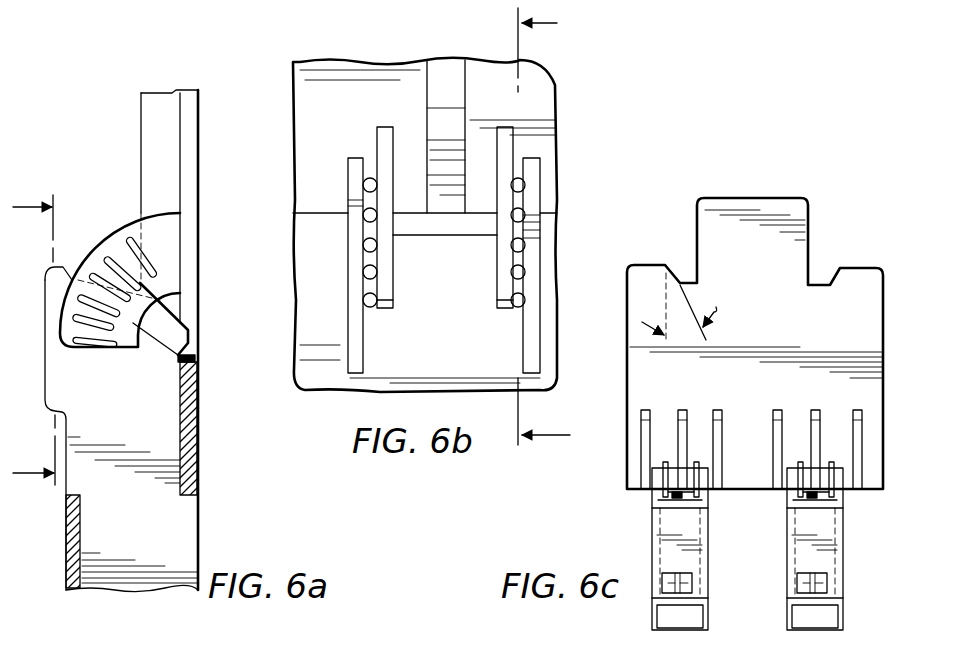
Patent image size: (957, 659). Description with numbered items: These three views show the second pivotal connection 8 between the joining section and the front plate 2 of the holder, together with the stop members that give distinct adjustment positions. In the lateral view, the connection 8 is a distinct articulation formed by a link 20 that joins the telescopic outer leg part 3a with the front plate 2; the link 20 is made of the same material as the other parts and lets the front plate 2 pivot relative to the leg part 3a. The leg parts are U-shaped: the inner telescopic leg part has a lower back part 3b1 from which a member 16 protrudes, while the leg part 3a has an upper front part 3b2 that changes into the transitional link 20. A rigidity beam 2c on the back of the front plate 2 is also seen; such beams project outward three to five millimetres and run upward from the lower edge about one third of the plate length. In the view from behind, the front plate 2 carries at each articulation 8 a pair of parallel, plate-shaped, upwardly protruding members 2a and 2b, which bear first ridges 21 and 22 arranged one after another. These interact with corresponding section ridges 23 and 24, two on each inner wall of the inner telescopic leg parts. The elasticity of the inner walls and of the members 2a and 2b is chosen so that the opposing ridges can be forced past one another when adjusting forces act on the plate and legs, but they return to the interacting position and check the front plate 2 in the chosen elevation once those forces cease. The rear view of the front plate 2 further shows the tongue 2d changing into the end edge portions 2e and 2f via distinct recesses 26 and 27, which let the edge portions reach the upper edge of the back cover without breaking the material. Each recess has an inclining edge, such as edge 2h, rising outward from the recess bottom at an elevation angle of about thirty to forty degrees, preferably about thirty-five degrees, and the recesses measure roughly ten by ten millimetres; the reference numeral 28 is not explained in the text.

In FIG. 6a, the front plate 2 is at (192, 162).
In FIG. 6b, the front plate 2 is at (342, 72).
In FIG. 6c, the front plate 2 is at (858, 334).
In FIG. 6b, the plate-shaped upwardly protruding member 2a is at (504, 135).
In FIG. 6b, the plate-shaped upwardly protruding member 2b is at (386, 135).
In FIG. 6a, the rigidity beam 2c is at (155, 143).
In FIG. 6c, the rigidity beam 2c is at (722, 420).
In FIG. 6c, the tongue 2d is at (810, 222).
In FIG. 6c, the end edge portion 2e is at (875, 258).
In FIG. 6c, the end edge portion 2f is at (640, 263).
In FIG. 6c, the inclining edge 2h is at (672, 277).
In FIG. 6a, the outer telescopic leg part 3a is at (170, 543).
In FIG. 6c, the outer telescopic leg part 3a is at (690, 562).
In FIG. 6a, the lower back part 3b1 is at (66, 526).
In FIG. 6a, the upper front part 3b2 is at (222, 420).
In FIG. 6a, the second pivotal connection 8 is at (207, 328).
In FIG. 6c, the member 16 is at (697, 591).
In FIG. 6a, the link 20 is at (196, 347).
In FIG. 6c, the link 20 is at (707, 497).
In FIG. 6b, the first ridges 21 is at (512, 187).
In FIG. 6b, the first ridges 22 is at (375, 187).
In FIG. 6b, the section ridges 23 is at (512, 261).
In FIG. 6b, the section ridges 24 is at (362, 263).
In FIG. 6c, the recess 26 is at (828, 280).
In FIG. 6c, the recess 27 is at (686, 279).
In FIG. 6c, the inclined flank 28 is at (836, 284).